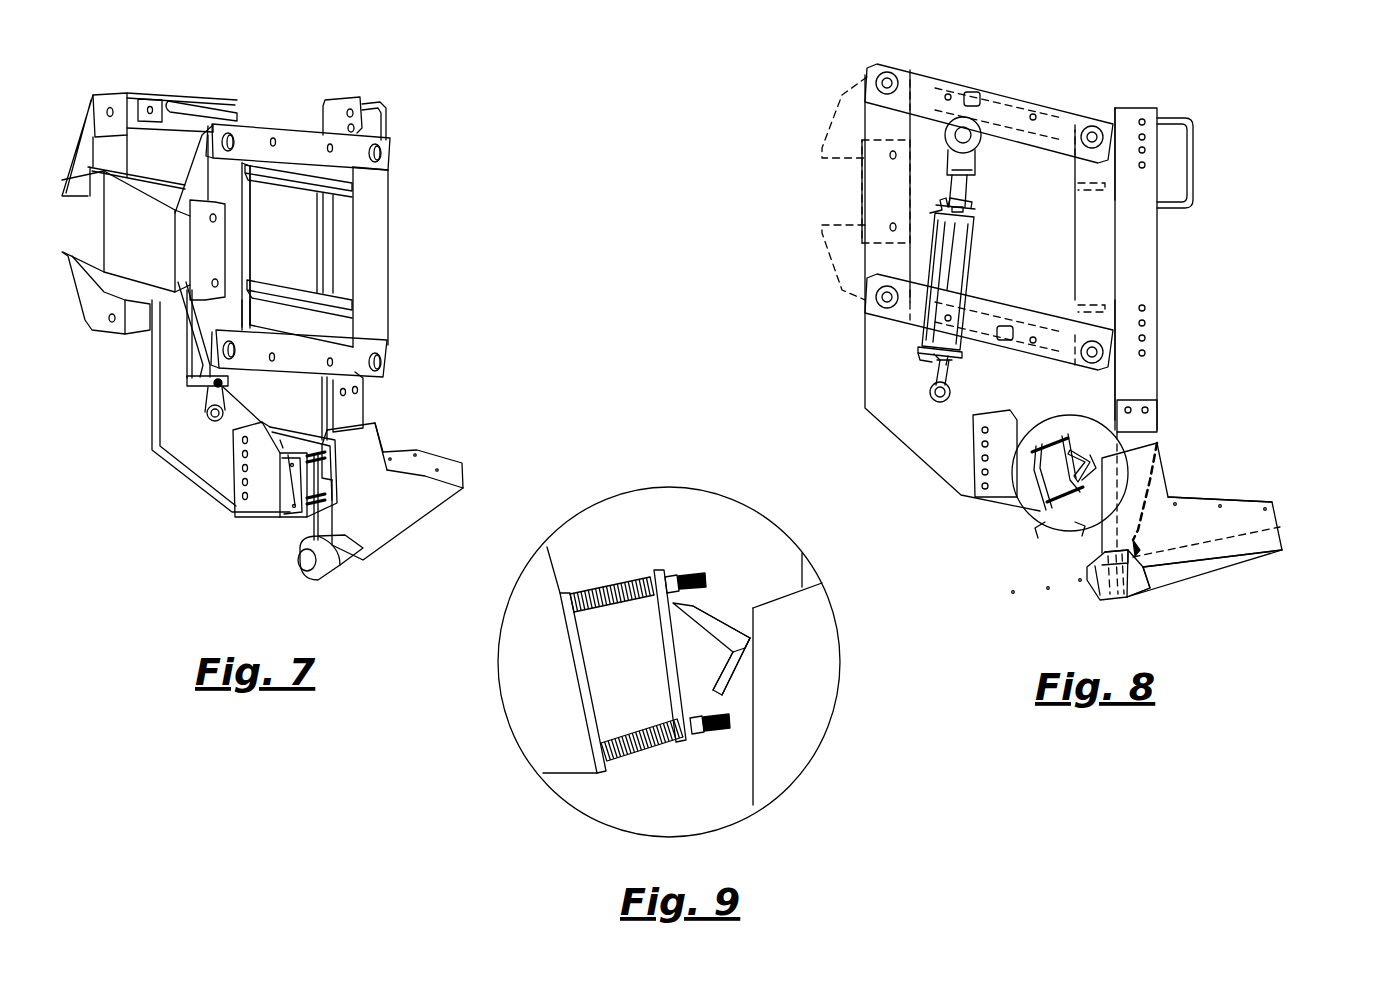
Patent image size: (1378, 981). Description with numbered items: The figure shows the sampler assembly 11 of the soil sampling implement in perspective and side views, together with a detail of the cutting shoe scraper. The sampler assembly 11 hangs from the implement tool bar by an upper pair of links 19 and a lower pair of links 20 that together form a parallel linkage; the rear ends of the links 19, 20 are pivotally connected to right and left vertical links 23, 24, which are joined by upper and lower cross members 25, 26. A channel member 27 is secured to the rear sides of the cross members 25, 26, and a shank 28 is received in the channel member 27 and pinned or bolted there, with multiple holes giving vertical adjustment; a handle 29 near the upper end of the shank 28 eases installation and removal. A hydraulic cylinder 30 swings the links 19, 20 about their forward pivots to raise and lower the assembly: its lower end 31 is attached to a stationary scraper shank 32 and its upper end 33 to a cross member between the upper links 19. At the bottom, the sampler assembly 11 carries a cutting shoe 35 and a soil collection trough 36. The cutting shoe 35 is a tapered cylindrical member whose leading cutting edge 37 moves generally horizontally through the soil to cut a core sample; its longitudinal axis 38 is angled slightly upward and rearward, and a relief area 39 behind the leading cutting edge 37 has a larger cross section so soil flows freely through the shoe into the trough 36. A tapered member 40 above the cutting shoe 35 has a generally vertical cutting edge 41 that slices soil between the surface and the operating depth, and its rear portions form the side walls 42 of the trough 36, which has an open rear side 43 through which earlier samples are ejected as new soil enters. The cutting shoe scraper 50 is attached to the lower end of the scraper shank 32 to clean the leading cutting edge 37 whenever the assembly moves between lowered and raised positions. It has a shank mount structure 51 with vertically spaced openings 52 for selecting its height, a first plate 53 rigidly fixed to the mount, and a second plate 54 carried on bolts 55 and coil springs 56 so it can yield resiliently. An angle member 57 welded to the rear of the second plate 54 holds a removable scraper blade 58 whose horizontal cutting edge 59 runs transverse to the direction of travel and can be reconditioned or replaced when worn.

In FIG. 7, the sampler assembly 11 is at (505, 314).
In FIG. 8, the sampler assembly 11 is at (1270, 322).
In FIG. 7, the upper pair of links 19 is at (305, 140).
In FIG. 8, the upper pair of links 19 is at (1060, 115).
In FIG. 7, the lower pair of links 20 is at (357, 360).
In FIG. 8, the lower pair of links 20 is at (1008, 313).
In FIG. 7, the right vertical link 23 is at (375, 236).
In FIG. 7, the left vertical link 24 is at (260, 243).
In FIG. 7, the upper cross member 25 is at (337, 172).
In FIG. 7, the lower cross member 26 is at (323, 317).
In FIG. 8, the channel member 27 is at (1147, 266).
In FIG. 7, the shank 28 is at (357, 98).
In FIG. 8, the shank 28 is at (1140, 378).
In FIG. 8, the handle 29 is at (1193, 140).
In FIG. 8, the hydraulic cylinder 30 is at (970, 257).
In FIG. 8, the lower end of the hydraulic cylinder 31 is at (930, 386).
In FIG. 7, the scraper shank 32 is at (165, 403).
In FIG. 8, the scraper shank 32 is at (910, 410).
In FIG. 8, the upper end of the hydraulic cylinder 33 is at (968, 130).
In FIG. 7, the cutting shoe 35 is at (333, 563).
In FIG. 8, the cutting shoe 35 is at (1097, 583).
In FIG. 9, the cutting shoe 35 is at (776, 724).
In FIG. 7, the soil collection trough 36 is at (403, 527).
In FIG. 8, the soil collection trough 36 is at (1243, 553).
In FIG. 7, the leading cutting edge 37 is at (317, 580).
In FIG. 9, the leading cutting edge 37 is at (747, 783).
In FIG. 8, the longitudinal axis of the cutting shoe 38 is at (1017, 596).
In FIG. 8, the relief area 39 is at (1130, 575).
In FIG. 7, the tapered member 40 is at (372, 477).
In FIG. 8, the tapered member 40 is at (1133, 470).
In FIG. 7, the vertical cutting edge 41 is at (313, 525).
In FIG. 8, the vertical cutting edge 41 is at (1097, 538).
In FIG. 8, the side walls 42 is at (1228, 510).
In FIG. 7, the open rear side 43 is at (433, 460).
In FIG. 8, the open rear side 43 is at (1270, 548).
In FIG. 8, the cutting shoe scraper 50 is at (1088, 457).
In FIG. 9, the cutting shoe scraper 50 is at (718, 620).
In FIG. 7, the shank mount structure 51 is at (258, 480).
In FIG. 9, the shank mount structure 51 is at (535, 693).
In FIG. 7, the vertically spaced openings 52 is at (240, 443).
In FIG. 7, the first plate 53 is at (293, 492).
In FIG. 9, the first plate 53 is at (585, 710).
In FIG. 7, the second plate 54 is at (292, 443).
In FIG. 9, the second plate 54 is at (673, 652).
In FIG. 9, the bolts 55 is at (687, 577).
In FIG. 9, the coil springs 56 is at (628, 583).
In FIG. 9, the angle member 57 is at (715, 672).
In FIG. 9, the scraper blade 58 is at (737, 623).
In FIG. 9, the cutting edge 59 is at (753, 642).